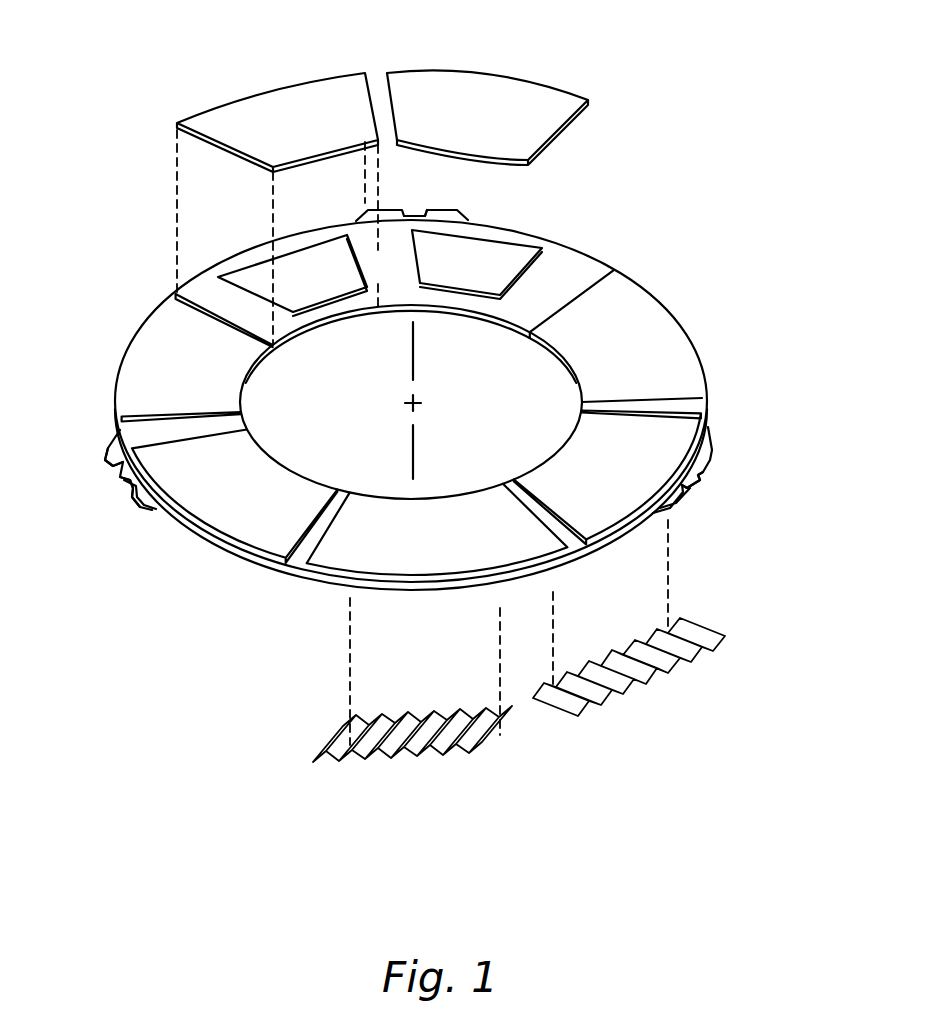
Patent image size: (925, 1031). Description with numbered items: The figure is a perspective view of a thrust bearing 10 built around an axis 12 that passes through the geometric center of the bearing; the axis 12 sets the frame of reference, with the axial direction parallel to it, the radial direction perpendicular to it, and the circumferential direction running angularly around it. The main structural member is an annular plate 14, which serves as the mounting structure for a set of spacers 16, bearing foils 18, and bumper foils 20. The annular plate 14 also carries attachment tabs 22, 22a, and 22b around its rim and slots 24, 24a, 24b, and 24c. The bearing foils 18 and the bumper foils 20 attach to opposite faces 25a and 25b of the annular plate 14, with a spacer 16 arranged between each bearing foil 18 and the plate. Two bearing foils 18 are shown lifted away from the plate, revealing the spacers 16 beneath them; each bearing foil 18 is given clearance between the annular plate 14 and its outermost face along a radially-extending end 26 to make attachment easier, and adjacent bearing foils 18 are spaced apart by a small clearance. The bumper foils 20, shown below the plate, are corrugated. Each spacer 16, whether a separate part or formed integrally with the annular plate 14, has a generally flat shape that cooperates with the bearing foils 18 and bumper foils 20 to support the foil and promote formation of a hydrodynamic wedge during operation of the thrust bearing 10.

The thrust bearing 10 is at (745, 134).
The axis 12 is at (413, 449).
The annular plate 14 is at (401, 290).
The spacer 16 is at (303, 265).
The bearing foil 18 is at (292, 86).
The bumper foil 20 is at (650, 692).
The attachment tab 22 is at (737, 447).
The attachment tab 22a is at (345, 200).
The attachment tab 22b is at (63, 447).
The slot 24 is at (703, 457).
The slot 24a is at (463, 219).
The slot 24b is at (140, 503).
The slot 24c is at (110, 453).
The face of annular plate 25a is at (367, 278).
The face of annular plate 25b is at (418, 600).
The radially-extending end 26 is at (196, 152).